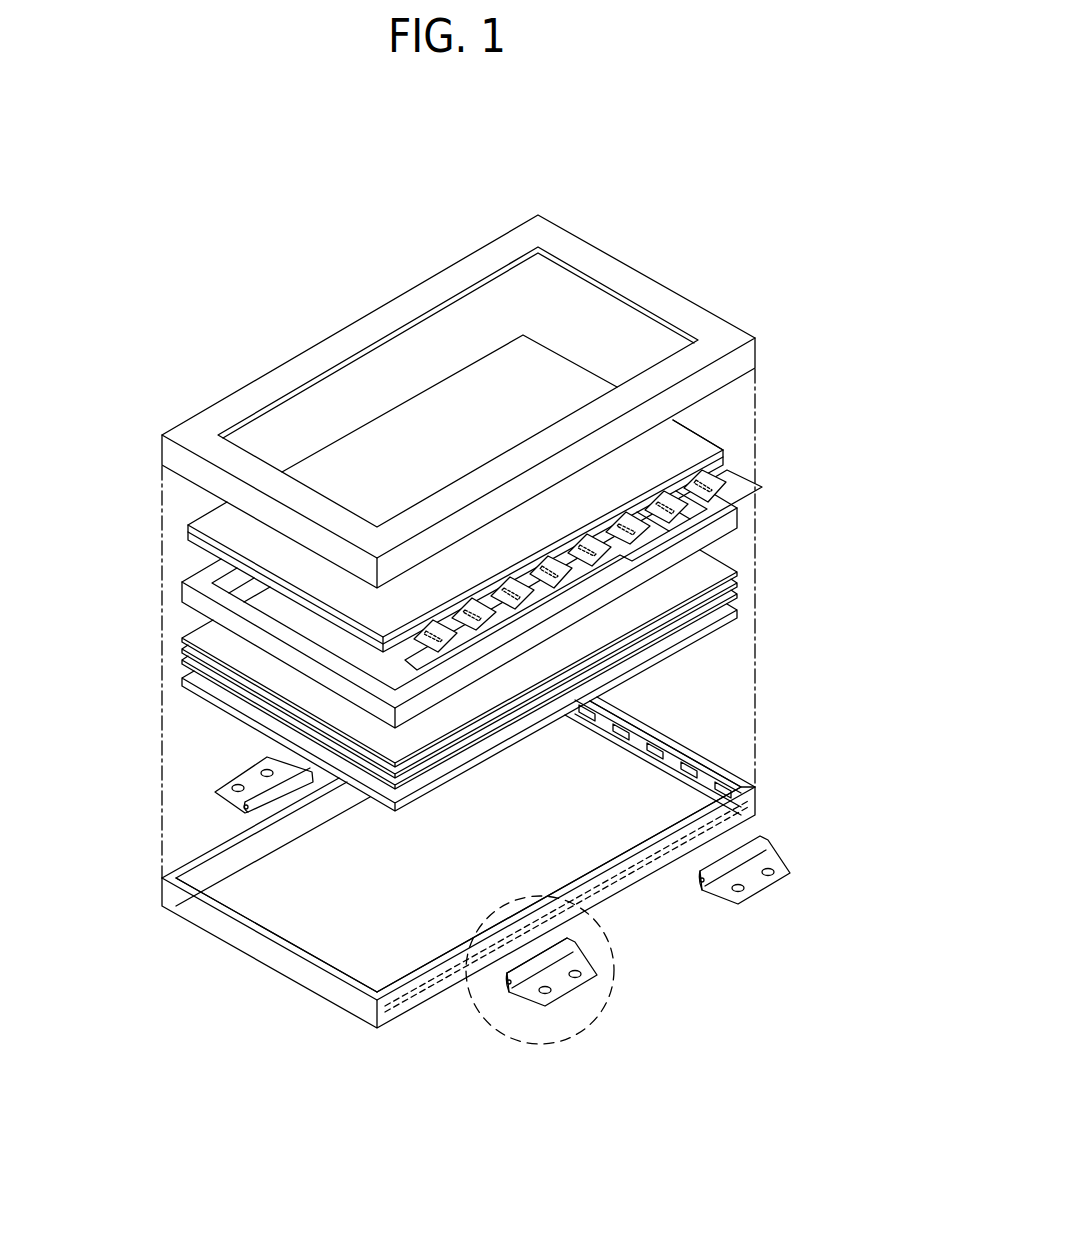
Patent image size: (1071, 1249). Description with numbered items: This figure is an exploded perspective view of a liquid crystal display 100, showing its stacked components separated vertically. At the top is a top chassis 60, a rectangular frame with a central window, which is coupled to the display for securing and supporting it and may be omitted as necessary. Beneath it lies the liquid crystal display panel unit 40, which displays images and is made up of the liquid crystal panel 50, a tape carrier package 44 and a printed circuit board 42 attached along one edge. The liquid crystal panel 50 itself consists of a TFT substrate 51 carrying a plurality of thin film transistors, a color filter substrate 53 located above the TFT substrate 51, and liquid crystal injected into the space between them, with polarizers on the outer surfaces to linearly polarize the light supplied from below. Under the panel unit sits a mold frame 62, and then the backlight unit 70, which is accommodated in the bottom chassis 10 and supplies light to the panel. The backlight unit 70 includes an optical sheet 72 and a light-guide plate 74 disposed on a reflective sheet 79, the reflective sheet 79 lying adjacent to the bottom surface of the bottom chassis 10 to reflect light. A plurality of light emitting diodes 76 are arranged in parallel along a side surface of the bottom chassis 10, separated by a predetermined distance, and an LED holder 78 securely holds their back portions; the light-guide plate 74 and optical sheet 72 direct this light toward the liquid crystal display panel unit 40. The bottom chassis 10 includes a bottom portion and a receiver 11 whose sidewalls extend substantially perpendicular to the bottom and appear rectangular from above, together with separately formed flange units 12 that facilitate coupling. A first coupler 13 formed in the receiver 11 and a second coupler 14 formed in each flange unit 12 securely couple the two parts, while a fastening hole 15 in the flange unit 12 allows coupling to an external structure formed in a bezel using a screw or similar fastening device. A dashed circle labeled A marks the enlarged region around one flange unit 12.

The liquid crystal display 100 is at (423, 216).
The bottom chassis 10 is at (757, 808).
The receiver 11 is at (277, 957).
The flange unit 12 is at (583, 996).
The first coupler 13 is at (722, 770).
The second coupler 14 is at (512, 995).
The fastening hole 15 is at (550, 1000).
The liquid crystal display panel unit 40 is at (182, 520).
The printed circuit board 42 is at (748, 492).
The tape carrier package 44 is at (724, 471).
The liquid crystal panel 50 is at (470, 362).
The TFT substrate 51 is at (722, 458).
The color filter substrate 53 is at (716, 449).
The top chassis 60 is at (648, 277).
The mold frame 62 is at (180, 587).
The backlight unit 70 is at (774, 575).
The optical sheet 72 is at (741, 572).
The light-guide plate 74 is at (733, 611).
The light emitting diodes 76 is at (683, 762).
The LED holder 78 is at (636, 742).
The reflective sheet 79 is at (607, 838).
The enlarged region A is at (533, 1043).